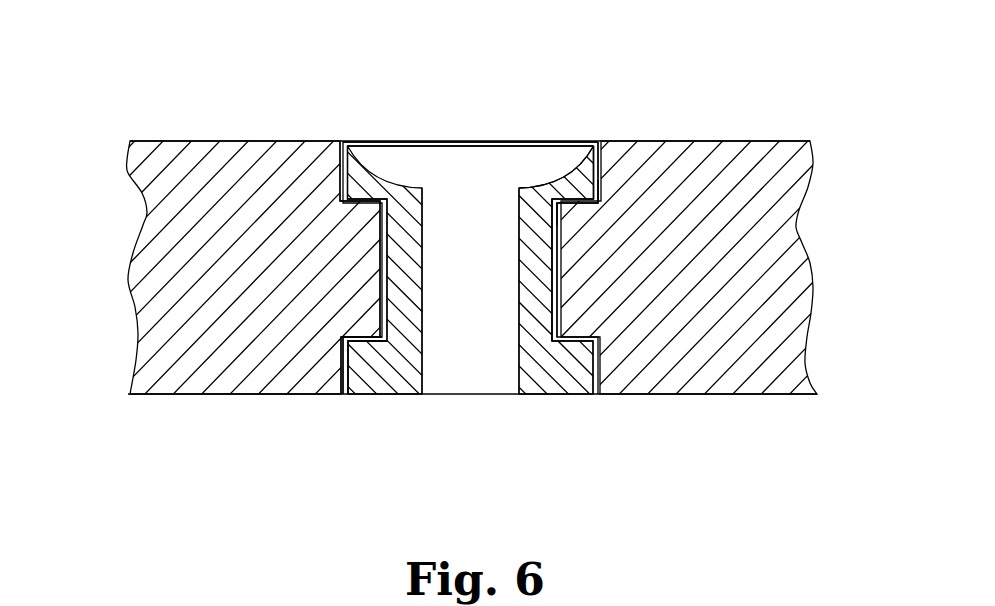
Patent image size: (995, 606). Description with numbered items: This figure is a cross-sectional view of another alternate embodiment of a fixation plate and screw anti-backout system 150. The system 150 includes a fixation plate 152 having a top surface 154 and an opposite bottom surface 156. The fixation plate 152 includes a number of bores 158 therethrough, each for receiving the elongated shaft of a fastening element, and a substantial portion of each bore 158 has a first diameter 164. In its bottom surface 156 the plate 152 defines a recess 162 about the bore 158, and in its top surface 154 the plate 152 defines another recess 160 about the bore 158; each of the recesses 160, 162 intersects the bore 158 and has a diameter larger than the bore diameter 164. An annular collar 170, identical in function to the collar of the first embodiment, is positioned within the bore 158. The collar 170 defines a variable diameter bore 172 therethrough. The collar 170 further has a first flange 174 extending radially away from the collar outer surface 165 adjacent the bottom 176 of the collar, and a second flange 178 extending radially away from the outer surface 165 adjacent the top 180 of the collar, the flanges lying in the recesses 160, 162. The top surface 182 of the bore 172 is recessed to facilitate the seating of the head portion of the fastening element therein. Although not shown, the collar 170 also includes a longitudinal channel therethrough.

The fixation plate and screw anti-backout system 150 is at (497, 258).
The fixation plate 152 is at (127, 177).
The top surface 154 is at (202, 141).
The bottom surface 156 is at (195, 396).
The bore 158 is at (464, 141).
The recess 160 is at (340, 168).
The recess 162 is at (600, 368).
The first diameter 164 is at (560, 264).
The collar outer surface 165 is at (380, 222).
The annular collar 170 is at (562, 372).
The variable diameter bore 172 is at (461, 322).
The first flange 174 is at (337, 380).
The bottom 176 is at (383, 396).
The second flange 178 is at (601, 197).
The top 180 is at (600, 163).
The top surface of bore 182 is at (550, 162).